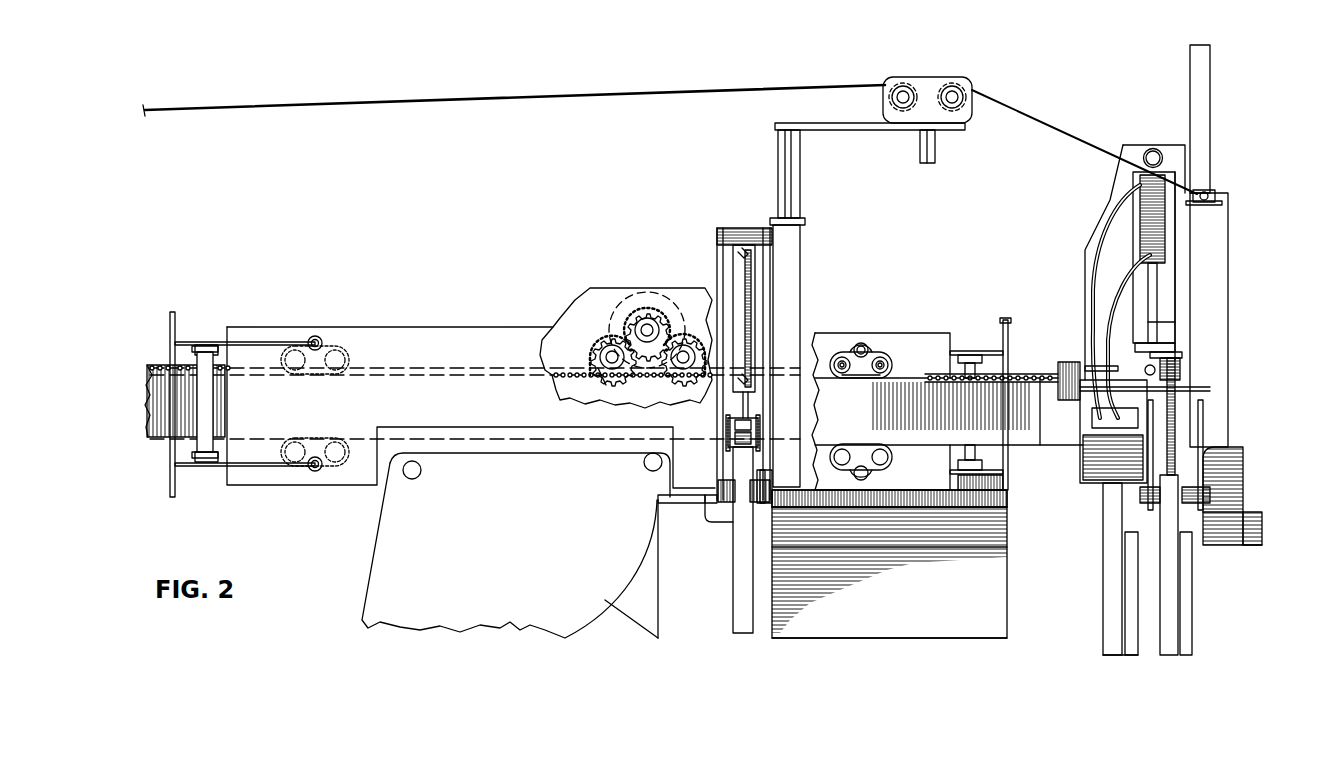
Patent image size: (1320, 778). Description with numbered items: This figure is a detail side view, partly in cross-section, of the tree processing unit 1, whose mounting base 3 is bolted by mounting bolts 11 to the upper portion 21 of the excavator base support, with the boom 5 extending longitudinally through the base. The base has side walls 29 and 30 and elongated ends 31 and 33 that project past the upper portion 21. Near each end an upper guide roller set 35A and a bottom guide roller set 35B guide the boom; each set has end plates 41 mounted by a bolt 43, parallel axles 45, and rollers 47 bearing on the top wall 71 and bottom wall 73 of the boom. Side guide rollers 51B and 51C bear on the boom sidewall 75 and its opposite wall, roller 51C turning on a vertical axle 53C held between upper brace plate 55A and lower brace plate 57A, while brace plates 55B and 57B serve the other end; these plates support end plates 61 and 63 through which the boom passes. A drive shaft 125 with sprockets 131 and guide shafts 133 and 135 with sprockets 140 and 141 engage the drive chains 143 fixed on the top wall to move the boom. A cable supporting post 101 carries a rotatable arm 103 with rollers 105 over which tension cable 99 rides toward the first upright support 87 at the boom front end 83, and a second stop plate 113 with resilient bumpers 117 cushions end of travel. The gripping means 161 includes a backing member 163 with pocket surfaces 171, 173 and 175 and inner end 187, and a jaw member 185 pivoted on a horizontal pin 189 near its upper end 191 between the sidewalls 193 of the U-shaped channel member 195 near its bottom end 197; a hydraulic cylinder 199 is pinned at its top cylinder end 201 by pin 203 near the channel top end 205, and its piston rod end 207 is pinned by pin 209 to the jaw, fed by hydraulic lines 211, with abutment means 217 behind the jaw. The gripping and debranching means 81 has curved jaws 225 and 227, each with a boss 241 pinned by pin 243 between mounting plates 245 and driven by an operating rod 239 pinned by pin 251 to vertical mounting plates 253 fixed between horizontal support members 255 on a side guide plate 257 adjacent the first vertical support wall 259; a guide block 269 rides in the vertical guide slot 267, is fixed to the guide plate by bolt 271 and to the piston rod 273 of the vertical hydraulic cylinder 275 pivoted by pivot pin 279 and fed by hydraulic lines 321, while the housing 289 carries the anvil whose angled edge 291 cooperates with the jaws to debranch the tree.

The tree processing unit 1 is at (1128, 388).
The mounting base 3 is at (455, 326).
The boom 5 is at (152, 432).
The mounting bolts 11 is at (422, 470).
The upper portion of base support 21 is at (382, 548).
The side wall of base 29 is at (408, 327).
The side wall of base 30 is at (938, 336).
The end of base 31 is at (168, 330).
The end of base 33 is at (1012, 330).
The upper guide roller set 35A is at (346, 345).
The bottom guide roller set 35B is at (336, 475).
The end plate 41 is at (862, 345).
The bolt 43 is at (878, 348).
The axle 45 is at (848, 376).
The roller 47 is at (843, 355).
The side guide roller 51B is at (978, 453).
The side guide roller 51C is at (190, 394).
The vertical axle 53C is at (192, 462).
The upper brace plate 55A is at (198, 343).
The upper brace plate 55B is at (1003, 328).
The lower brace plate 57A is at (188, 490).
The lower brace plate 57B is at (980, 488).
The end plate 61 is at (170, 344).
The end plate 63 is at (1008, 355).
The top wall of boom 71 is at (640, 372).
The bottom wall of boom 73 is at (898, 452).
The sidewall of boom 75 is at (970, 421).
The gripping and debranching means 81 is at (1092, 652).
The front end of boom 83 is at (1240, 305).
The first upright support 87 is at (1228, 215).
The tension cable 99 is at (527, 94).
The cable supporting post 101 is at (803, 230).
The rotatable arm 103 is at (836, 128).
The rollers 105 is at (920, 85).
The second stop plate 113 is at (1082, 485).
The resilient bumper 117 is at (1060, 388).
The drive shaft 125 is at (648, 318).
The sprocket 131 is at (628, 322).
The guide shaft 133 is at (596, 360).
The guide shaft 135 is at (690, 374).
The sprocket 140 is at (600, 344).
The sprocket 141 is at (690, 340).
The drive chain 143 is at (152, 367).
The gripping means 161 is at (836, 648).
The backing member 163 is at (1008, 582).
The second angled surface 171 is at (926, 500).
The third vertical surface 173 is at (980, 527).
The fourth wide surface 175 is at (950, 606).
The jaw member 185 is at (730, 598).
The inner end of backing member 187 is at (733, 568).
The horizontal pin 189 is at (728, 530).
The upper end of jaw 191 is at (728, 443).
The sidewalls of channel member 193 is at (733, 268).
The U-shaped channel member 195 is at (760, 505).
The bottom end of channel member 197 is at (702, 505).
The hydraulic cylinder 199 is at (758, 300).
The top cylinder end 201 is at (740, 230).
The pin 203 is at (717, 232).
The top end of channel member 205 is at (773, 222).
The piston rod end 207 is at (728, 422).
The pin 209 is at (762, 430).
The hydraulic lines 211 is at (742, 260).
The abutment means 217 is at (660, 628).
The curved jaw 225 is at (1180, 660).
The curved jaw 227 is at (1118, 657).
The operating rod 239 is at (1178, 426).
The boss 241 is at (1195, 520).
The pin 243 is at (1230, 472).
The mounting plates 245 is at (1215, 448).
The pin 251 is at (1182, 384).
The vertical mounting plates 253 is at (1162, 368).
The horizontal support members 255 is at (1178, 353).
The side guide plate 257 is at (1162, 394).
The first vertical support wall 259 is at (1112, 188).
The vertical guide slot 267 is at (1168, 322).
The guide block 269 is at (1168, 340).
The bolt 271 is at (1090, 366).
The piston rod 273 is at (1175, 288).
The vertical hydraulic cylinder 275 is at (1178, 240).
The pivot pin 279 is at (1153, 149).
The housing 289 is at (1250, 502).
The angled edge 291 is at (1262, 545).
The hydraulic lines 321 is at (1120, 215).